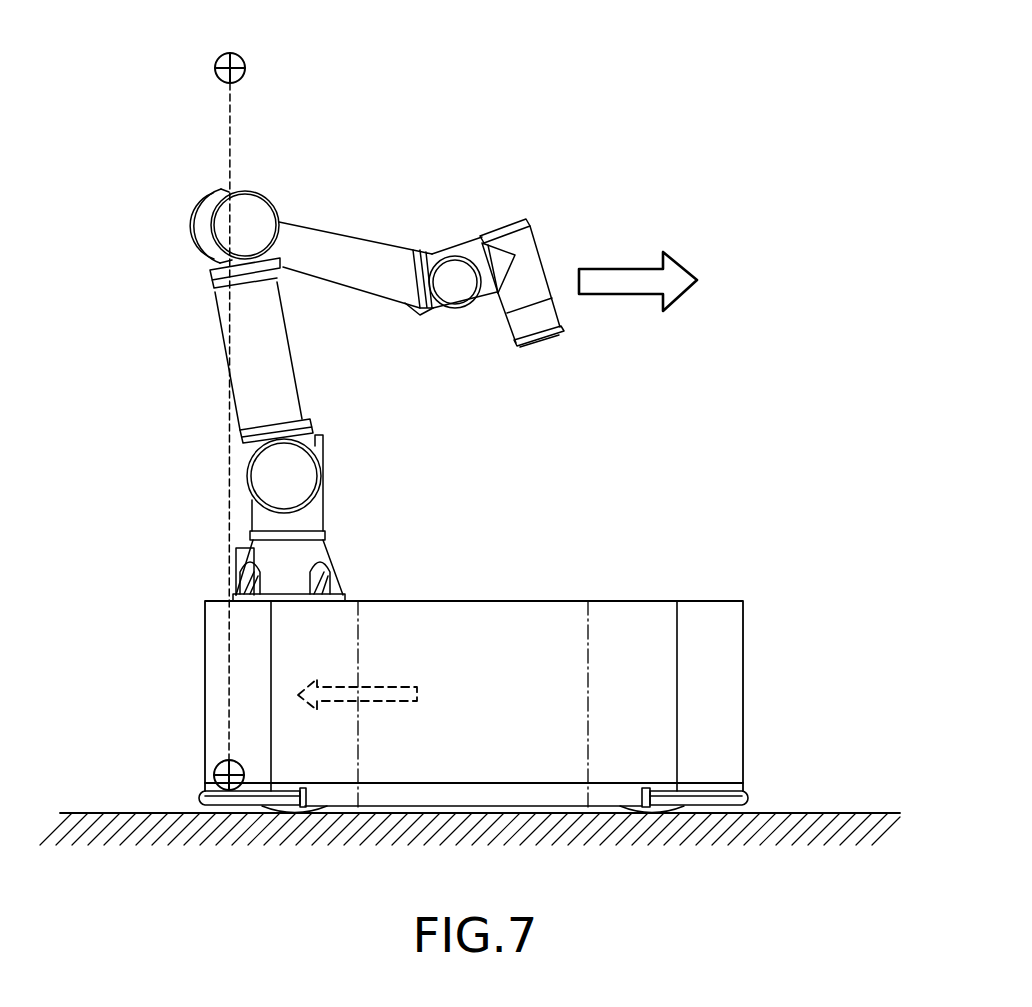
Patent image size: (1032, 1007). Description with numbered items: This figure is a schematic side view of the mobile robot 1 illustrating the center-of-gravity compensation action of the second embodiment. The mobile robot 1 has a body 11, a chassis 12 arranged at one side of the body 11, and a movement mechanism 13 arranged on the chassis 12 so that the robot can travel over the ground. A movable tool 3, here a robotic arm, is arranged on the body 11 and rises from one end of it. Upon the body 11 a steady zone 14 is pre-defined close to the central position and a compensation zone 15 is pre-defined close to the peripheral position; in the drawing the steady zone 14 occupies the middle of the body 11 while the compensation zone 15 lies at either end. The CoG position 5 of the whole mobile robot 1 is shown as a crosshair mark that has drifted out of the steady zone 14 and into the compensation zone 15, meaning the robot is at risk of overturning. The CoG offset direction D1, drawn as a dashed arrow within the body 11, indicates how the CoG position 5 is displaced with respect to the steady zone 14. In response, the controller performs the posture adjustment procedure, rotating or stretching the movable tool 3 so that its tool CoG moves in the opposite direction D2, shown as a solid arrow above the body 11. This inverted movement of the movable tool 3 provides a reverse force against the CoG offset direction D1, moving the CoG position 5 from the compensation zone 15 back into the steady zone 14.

The mobile robot 1 is at (465, 32).
The movable tool 3 is at (337, 240).
The CoG position 5 is at (216, 60).
The body 11 is at (745, 693).
The chassis 12 is at (480, 793).
The movement mechanism 13 is at (667, 817).
The steady zone 14 is at (474, 612).
The compensation zone 15 is at (216, 630).
The CoG offset direction D1 is at (371, 690).
The opposite direction D2 is at (623, 275).